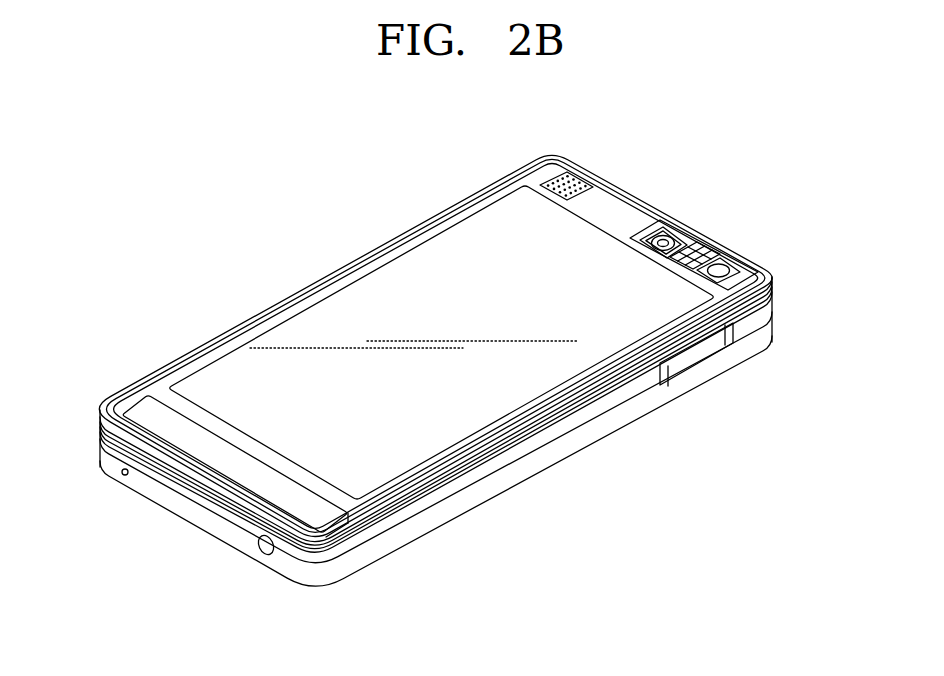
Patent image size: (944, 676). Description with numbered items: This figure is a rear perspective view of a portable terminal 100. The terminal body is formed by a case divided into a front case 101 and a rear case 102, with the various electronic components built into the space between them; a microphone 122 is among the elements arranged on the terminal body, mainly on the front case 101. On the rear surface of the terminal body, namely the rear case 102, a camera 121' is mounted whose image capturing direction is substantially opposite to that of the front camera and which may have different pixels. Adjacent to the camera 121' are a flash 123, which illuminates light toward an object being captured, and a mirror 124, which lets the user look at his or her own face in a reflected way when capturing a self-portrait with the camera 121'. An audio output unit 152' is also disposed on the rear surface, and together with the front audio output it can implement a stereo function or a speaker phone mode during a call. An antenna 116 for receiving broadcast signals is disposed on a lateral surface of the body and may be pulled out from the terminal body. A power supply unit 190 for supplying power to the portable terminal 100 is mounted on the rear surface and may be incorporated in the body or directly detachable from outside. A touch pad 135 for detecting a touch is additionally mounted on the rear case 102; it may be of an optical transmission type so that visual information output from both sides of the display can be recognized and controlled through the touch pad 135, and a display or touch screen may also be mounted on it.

The portable terminal 100 is at (396, 208).
The front case 101 is at (765, 325).
The rear case 102 is at (765, 303).
The antenna 116 is at (262, 552).
The camera 121' is at (694, 220).
The microphone 122 is at (121, 475).
The flash 123 is at (705, 248).
The mirror 124 is at (733, 264).
The touch pad 135 is at (355, 302).
The audio output unit 152' is at (603, 170).
The power supply unit 190 is at (121, 392).